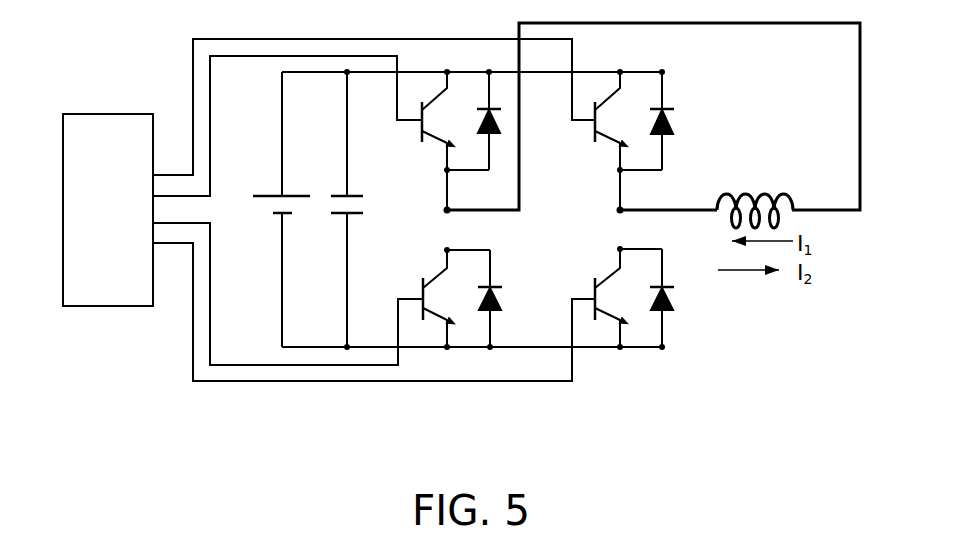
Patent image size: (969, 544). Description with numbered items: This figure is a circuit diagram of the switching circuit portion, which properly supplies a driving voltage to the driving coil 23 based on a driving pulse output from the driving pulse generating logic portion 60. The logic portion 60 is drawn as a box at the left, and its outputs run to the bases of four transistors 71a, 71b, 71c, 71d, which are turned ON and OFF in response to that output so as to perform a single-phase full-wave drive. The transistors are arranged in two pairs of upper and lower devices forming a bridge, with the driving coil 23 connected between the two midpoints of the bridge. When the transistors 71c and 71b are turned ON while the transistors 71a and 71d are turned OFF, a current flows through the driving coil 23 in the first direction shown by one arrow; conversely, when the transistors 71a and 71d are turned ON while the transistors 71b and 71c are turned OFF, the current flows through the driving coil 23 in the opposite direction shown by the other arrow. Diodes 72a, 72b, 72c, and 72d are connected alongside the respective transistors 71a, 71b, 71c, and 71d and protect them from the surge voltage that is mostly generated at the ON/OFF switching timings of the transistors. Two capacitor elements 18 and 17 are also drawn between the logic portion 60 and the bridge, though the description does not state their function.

The driving pulse generating logic portion 60 is at (95, 114).
The capacitor 18 is at (270, 190).
The capacitor 17 is at (340, 190).
The transistor 71a is at (589, 130).
The transistor 71b is at (590, 292).
The transistor 71c is at (418, 130).
The transistor 71d is at (418, 292).
The diode 72a is at (678, 122).
The diode 72b is at (678, 300).
The diode 72c is at (502, 120).
The diode 72d is at (502, 298).
The driving coil 23 is at (765, 193).